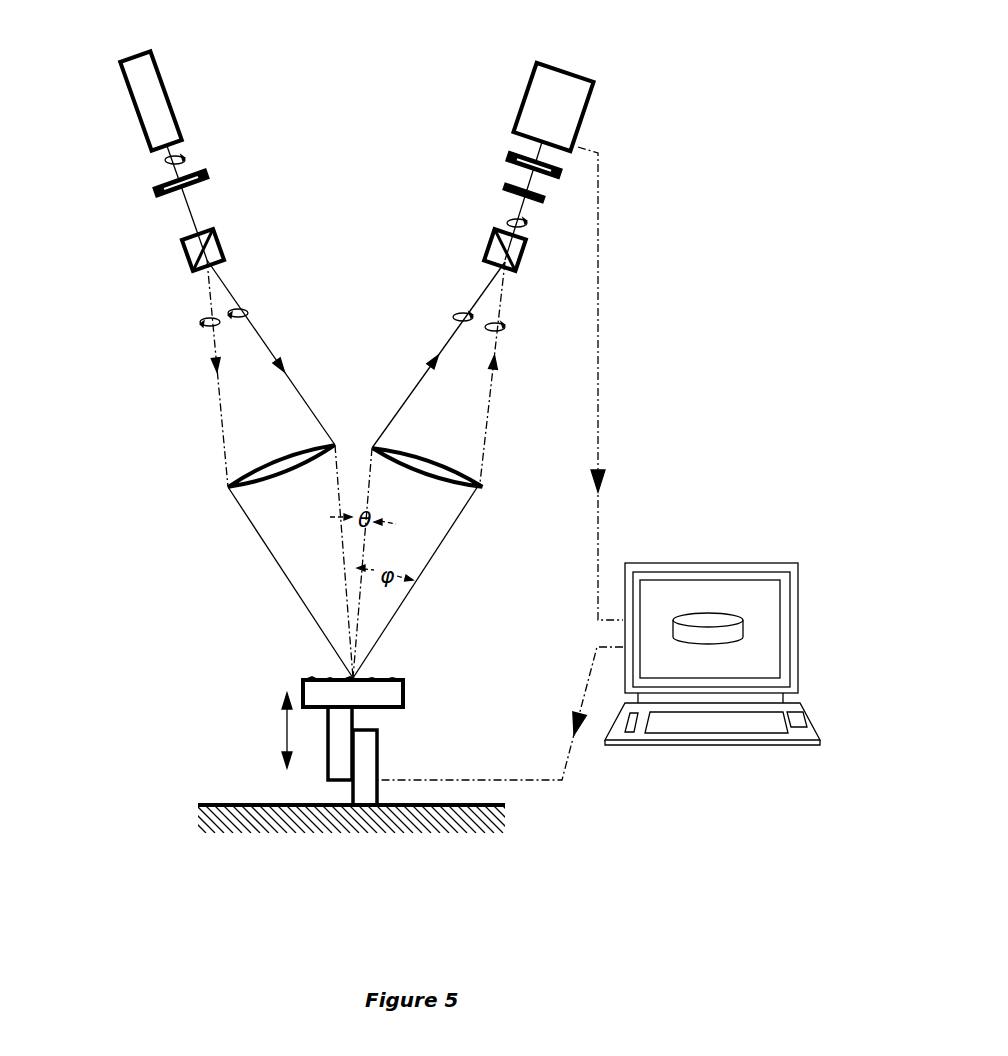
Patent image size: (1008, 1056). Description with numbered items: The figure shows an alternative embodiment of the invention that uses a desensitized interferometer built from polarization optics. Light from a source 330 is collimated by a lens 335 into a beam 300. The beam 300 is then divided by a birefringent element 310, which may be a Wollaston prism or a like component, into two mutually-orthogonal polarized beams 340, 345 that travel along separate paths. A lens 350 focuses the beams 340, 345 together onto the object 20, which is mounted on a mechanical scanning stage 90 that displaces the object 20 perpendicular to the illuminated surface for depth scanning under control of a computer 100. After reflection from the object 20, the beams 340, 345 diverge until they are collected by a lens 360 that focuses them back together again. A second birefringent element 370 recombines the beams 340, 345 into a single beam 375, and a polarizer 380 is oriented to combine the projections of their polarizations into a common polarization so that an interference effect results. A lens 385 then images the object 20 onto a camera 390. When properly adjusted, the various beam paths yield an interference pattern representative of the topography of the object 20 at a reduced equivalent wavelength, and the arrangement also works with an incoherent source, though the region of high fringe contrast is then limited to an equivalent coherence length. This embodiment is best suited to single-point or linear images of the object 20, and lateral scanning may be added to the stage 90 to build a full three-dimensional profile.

The object 20 is at (403, 693).
The mechanical scanning stage 90 is at (353, 713).
The computer 100 is at (803, 623).
The beam 300 is at (165, 163).
The birefringent element 310 is at (223, 241).
The source 330 is at (131, 100).
The lens 335 is at (207, 184).
The beam 340 is at (200, 328).
The beam 345 is at (250, 312).
The lens 350 is at (259, 476).
The lens 360 is at (453, 477).
The birefringent element 370 is at (487, 247).
The beam 375 is at (510, 215).
The polarizer 380 is at (507, 187).
The lens 385 is at (510, 153).
The camera 390 is at (577, 107).